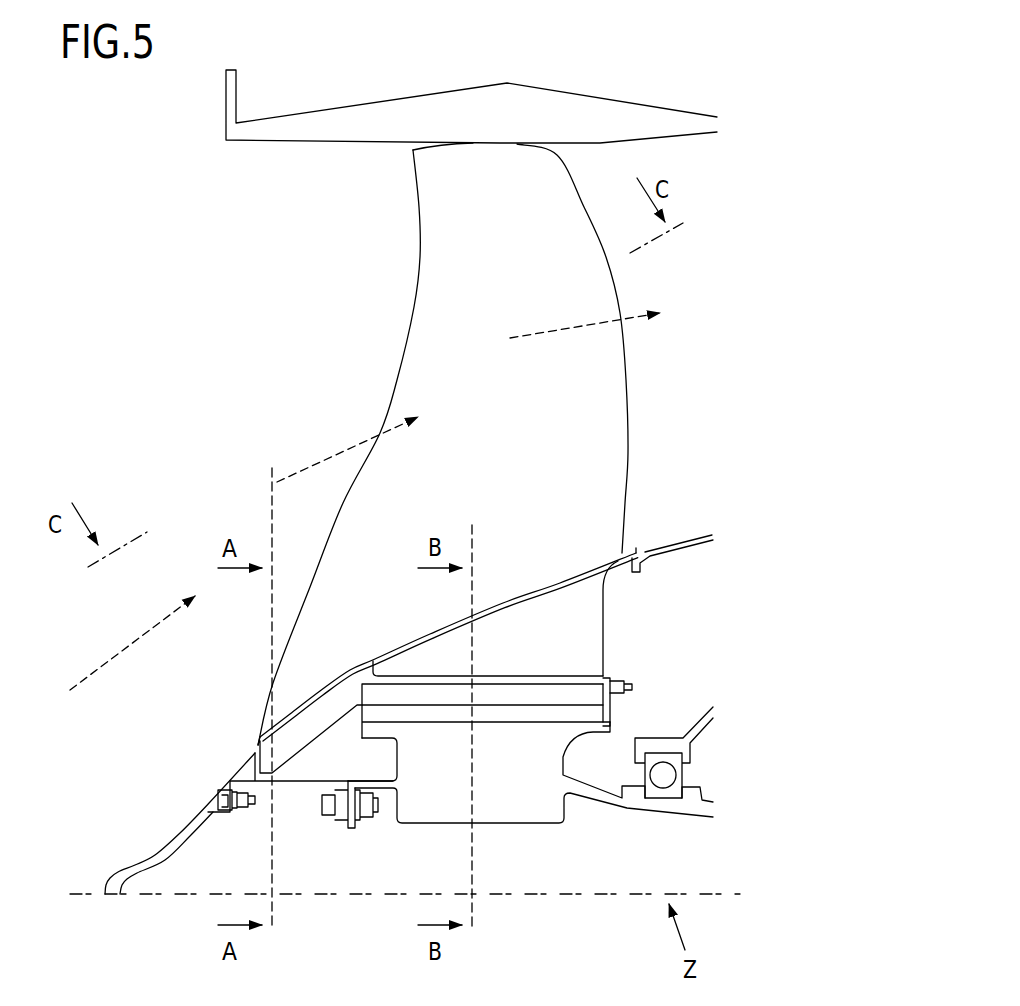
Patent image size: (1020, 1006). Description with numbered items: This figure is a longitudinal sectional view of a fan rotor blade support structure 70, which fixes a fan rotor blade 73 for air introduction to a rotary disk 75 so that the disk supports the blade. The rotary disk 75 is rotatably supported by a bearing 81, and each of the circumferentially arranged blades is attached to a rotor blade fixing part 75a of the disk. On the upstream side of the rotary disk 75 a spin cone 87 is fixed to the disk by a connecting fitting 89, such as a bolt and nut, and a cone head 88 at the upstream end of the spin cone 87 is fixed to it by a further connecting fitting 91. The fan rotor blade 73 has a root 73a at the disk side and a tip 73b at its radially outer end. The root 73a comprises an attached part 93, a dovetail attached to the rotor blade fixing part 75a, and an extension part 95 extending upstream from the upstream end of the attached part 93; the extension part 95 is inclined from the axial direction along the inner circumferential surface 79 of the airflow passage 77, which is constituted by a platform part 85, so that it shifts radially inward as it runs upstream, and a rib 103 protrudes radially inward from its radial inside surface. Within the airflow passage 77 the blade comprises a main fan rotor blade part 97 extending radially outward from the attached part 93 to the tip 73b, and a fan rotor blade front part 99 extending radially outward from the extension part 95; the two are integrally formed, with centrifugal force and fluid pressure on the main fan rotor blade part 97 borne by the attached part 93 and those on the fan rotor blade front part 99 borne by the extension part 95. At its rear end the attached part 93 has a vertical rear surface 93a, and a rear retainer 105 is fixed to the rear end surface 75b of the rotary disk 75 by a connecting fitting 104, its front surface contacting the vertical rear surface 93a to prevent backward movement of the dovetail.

The fan rotor blade support structure 70 is at (165, 266).
The fan rotor blade 73 is at (370, 374).
The root 73a is at (382, 624).
The tip 73b is at (475, 147).
The rotary disk 75 is at (525, 800).
The rotor blade fixing part 75a is at (545, 713).
The rear end surface 75b is at (610, 715).
The airflow passage 77 is at (251, 405).
The inner circumferential surface 79 is at (318, 690).
The bearing 81 is at (665, 778).
The platform part 85 is at (568, 583).
The spin cone 87 is at (248, 775).
The cone head 88 is at (180, 838).
The connecting fitting 89 is at (328, 808).
The connecting fitting 91 is at (246, 822).
The attached part 93 is at (520, 695).
The vertical rear surface 93a is at (630, 680).
The extension part 95 is at (300, 772).
The main fan rotor blade part 97 is at (525, 395).
The fan rotor blade front part 99 is at (330, 610).
The rib 103 is at (300, 728).
The connecting fitting 104 is at (638, 687).
The rear retainer 105 is at (608, 702).